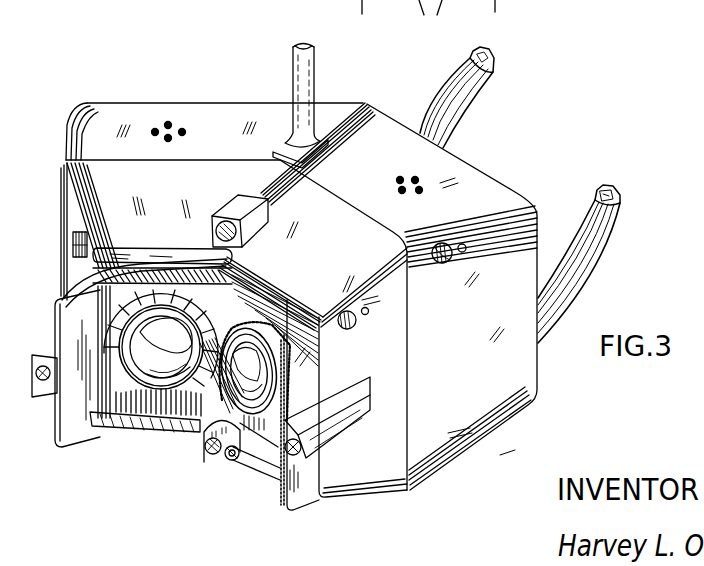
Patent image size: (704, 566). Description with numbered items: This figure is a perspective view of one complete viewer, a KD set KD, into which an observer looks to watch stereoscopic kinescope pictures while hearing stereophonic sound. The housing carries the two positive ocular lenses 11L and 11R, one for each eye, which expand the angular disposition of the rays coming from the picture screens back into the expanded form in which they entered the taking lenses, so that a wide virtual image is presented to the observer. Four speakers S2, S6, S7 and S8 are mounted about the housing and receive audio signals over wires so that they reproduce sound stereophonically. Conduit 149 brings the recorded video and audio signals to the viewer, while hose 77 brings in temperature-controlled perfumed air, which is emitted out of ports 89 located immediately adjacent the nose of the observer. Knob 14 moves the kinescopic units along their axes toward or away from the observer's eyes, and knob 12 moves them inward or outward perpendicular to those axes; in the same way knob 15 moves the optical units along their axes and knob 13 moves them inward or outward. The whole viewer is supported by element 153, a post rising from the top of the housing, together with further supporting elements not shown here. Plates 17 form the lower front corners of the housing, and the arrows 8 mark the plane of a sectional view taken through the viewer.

The KD set KD is at (238, 48).
The section line of FIG. 8 is at (93, 100).
The knob 12 is at (67, 155).
The knob 13 is at (73, 239).
The knob 14 is at (450, 262).
The knob 15 is at (353, 328).
The mounting plate 17 is at (62, 446).
The hose 77 is at (630, 206).
The ports 89 is at (205, 447).
The conduit 149 is at (492, 84).
The support element 153 is at (315, 75).
The positive lens 11L is at (177, 303).
The positive lens 11R is at (300, 326).
The speaker S2 is at (296, 456).
The speaker S6 is at (42, 345).
The speaker S7 is at (214, 230).
The speaker S8 is at (232, 461).